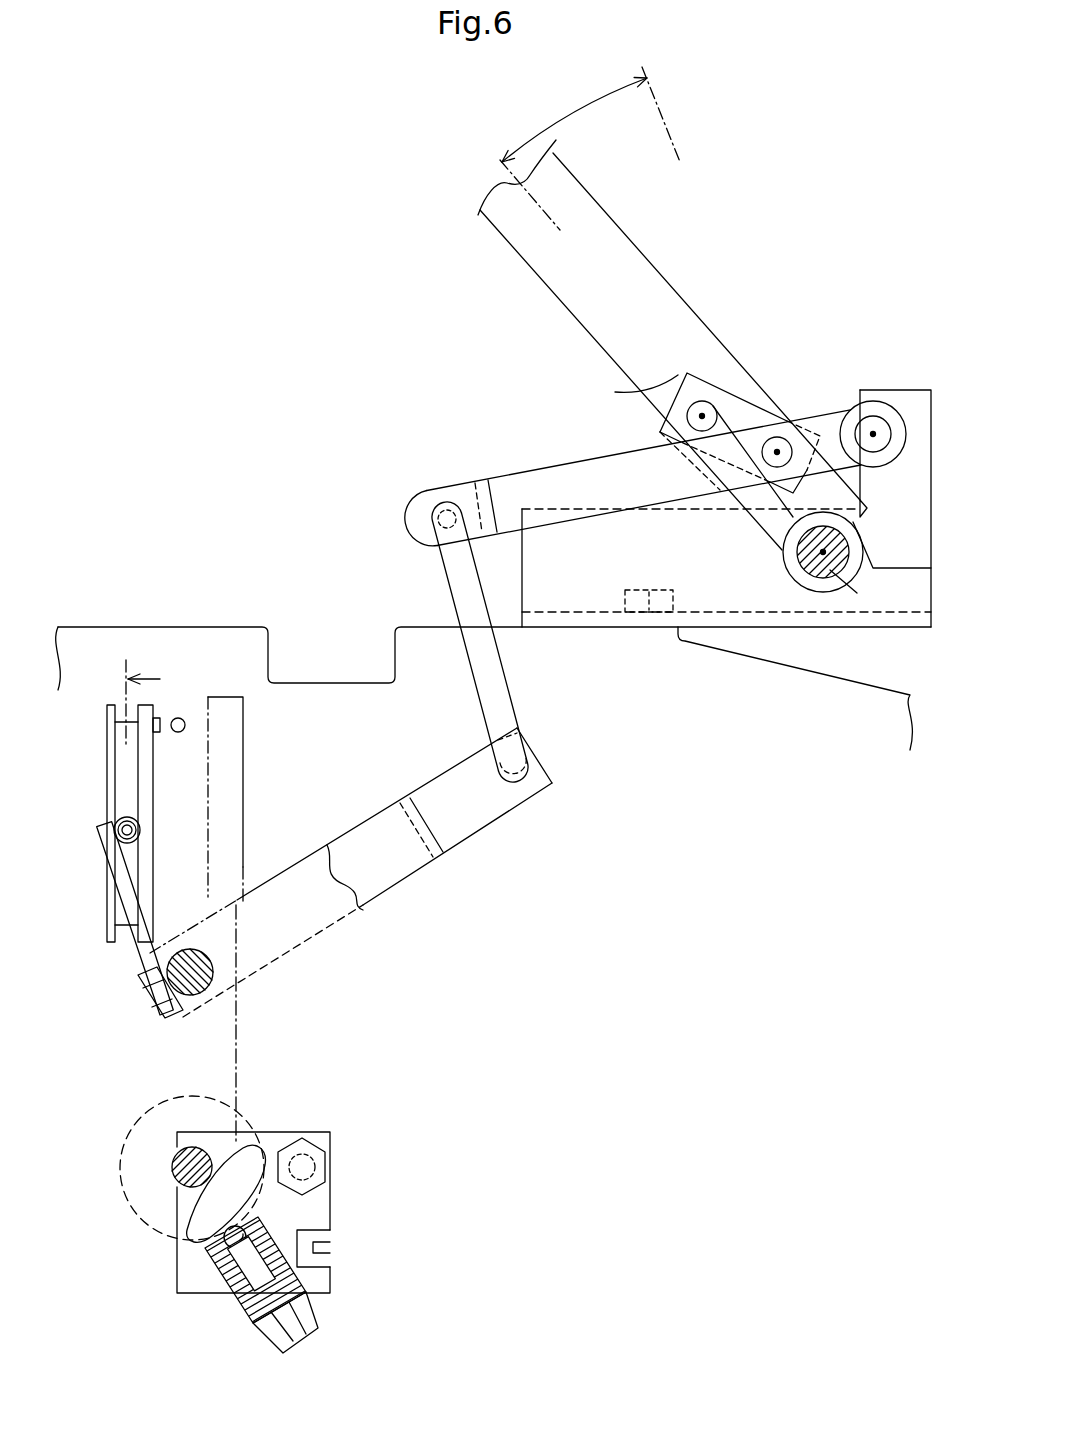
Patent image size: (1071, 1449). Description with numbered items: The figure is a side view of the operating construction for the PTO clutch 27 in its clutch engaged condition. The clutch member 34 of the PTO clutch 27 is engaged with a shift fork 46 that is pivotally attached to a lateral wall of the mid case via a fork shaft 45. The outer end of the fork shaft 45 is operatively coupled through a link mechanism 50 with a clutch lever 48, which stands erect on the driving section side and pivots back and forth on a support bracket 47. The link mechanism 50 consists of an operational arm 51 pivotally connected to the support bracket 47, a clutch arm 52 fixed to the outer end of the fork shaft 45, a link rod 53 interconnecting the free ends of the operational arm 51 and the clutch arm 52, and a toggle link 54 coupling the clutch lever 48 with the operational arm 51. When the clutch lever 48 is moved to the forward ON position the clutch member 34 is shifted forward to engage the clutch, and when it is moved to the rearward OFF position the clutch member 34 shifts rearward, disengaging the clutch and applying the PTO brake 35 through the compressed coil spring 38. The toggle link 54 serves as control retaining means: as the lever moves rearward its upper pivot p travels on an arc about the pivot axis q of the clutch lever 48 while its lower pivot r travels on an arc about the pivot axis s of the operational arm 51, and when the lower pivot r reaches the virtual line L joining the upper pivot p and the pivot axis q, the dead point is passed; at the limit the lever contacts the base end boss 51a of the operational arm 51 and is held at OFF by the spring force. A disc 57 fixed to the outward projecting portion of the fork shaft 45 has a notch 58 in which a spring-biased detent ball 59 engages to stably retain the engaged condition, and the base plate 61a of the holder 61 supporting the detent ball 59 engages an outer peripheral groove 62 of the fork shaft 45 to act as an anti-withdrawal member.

The clutch lever 48 is at (650, 262).
The toggle link 54 is at (742, 400).
The support bracket 47 is at (900, 390).
The link mechanism 50 is at (340, 455).
The operational arm 51 is at (512, 480).
The base end boss 51a is at (887, 467).
The clutch arm 52 is at (398, 875).
The link rod 53 is at (512, 682).
The PTO brake 35 is at (252, 762).
The clutch member 34 is at (105, 783).
The PTO clutch 27 is at (103, 690).
The coil spring 38 is at (180, 718).
The shift fork 46 is at (132, 895).
The fork shaft 45 is at (205, 995).
The base plate 61a is at (275, 1133).
The outer peripheral groove 62 is at (172, 1168).
The disc 57 is at (262, 1170).
The notch 58 is at (253, 1225).
The detent ball 59 is at (228, 1230).
The holder 61 is at (238, 1303).
The upper pivot p is at (702, 416).
The pivot axis q is at (823, 552).
The lower pivot r is at (777, 452).
The pivot axis s is at (873, 434).
The virtual line L is at (639, 388).